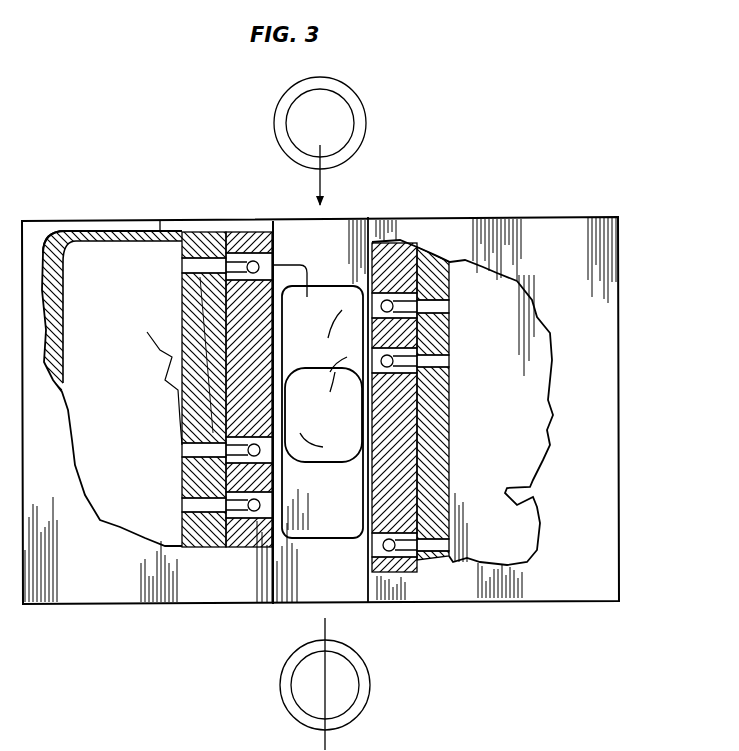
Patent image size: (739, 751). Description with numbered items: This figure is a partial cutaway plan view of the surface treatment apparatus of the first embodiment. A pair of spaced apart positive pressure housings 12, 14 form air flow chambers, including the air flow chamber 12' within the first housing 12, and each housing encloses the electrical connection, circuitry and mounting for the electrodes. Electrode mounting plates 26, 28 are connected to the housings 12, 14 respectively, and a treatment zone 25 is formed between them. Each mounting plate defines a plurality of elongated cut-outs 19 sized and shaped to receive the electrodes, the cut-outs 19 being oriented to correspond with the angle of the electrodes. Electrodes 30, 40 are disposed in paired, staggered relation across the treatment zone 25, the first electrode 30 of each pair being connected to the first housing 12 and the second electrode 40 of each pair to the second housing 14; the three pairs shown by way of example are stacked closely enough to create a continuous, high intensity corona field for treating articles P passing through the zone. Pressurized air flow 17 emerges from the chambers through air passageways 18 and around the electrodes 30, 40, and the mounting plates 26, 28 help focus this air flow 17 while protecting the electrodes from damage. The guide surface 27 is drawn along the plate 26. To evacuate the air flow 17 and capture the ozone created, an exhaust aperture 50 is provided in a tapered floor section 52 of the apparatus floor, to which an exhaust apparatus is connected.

The positive pressure housing 12 is at (103, 416).
The air flow chamber 12' is at (112, 208).
The positive pressure housing 14 is at (592, 553).
The air flow 17 is at (180, 265).
The air passageways 18 is at (147, 332).
The elongated cut-outs 19 is at (453, 443).
The treatment zone 25 is at (368, 220).
The electrode mounting plate 26 is at (252, 221).
The guide surface of left block 27 is at (275, 242).
The electrode mounting plate 28 is at (388, 243).
The electrodes 30 is at (271, 221).
The electrodes 40 is at (487, 406).
The exhaust aperture 50 is at (332, 462).
The tapered floor section 52 is at (312, 351).
The articles P is at (366, 121).